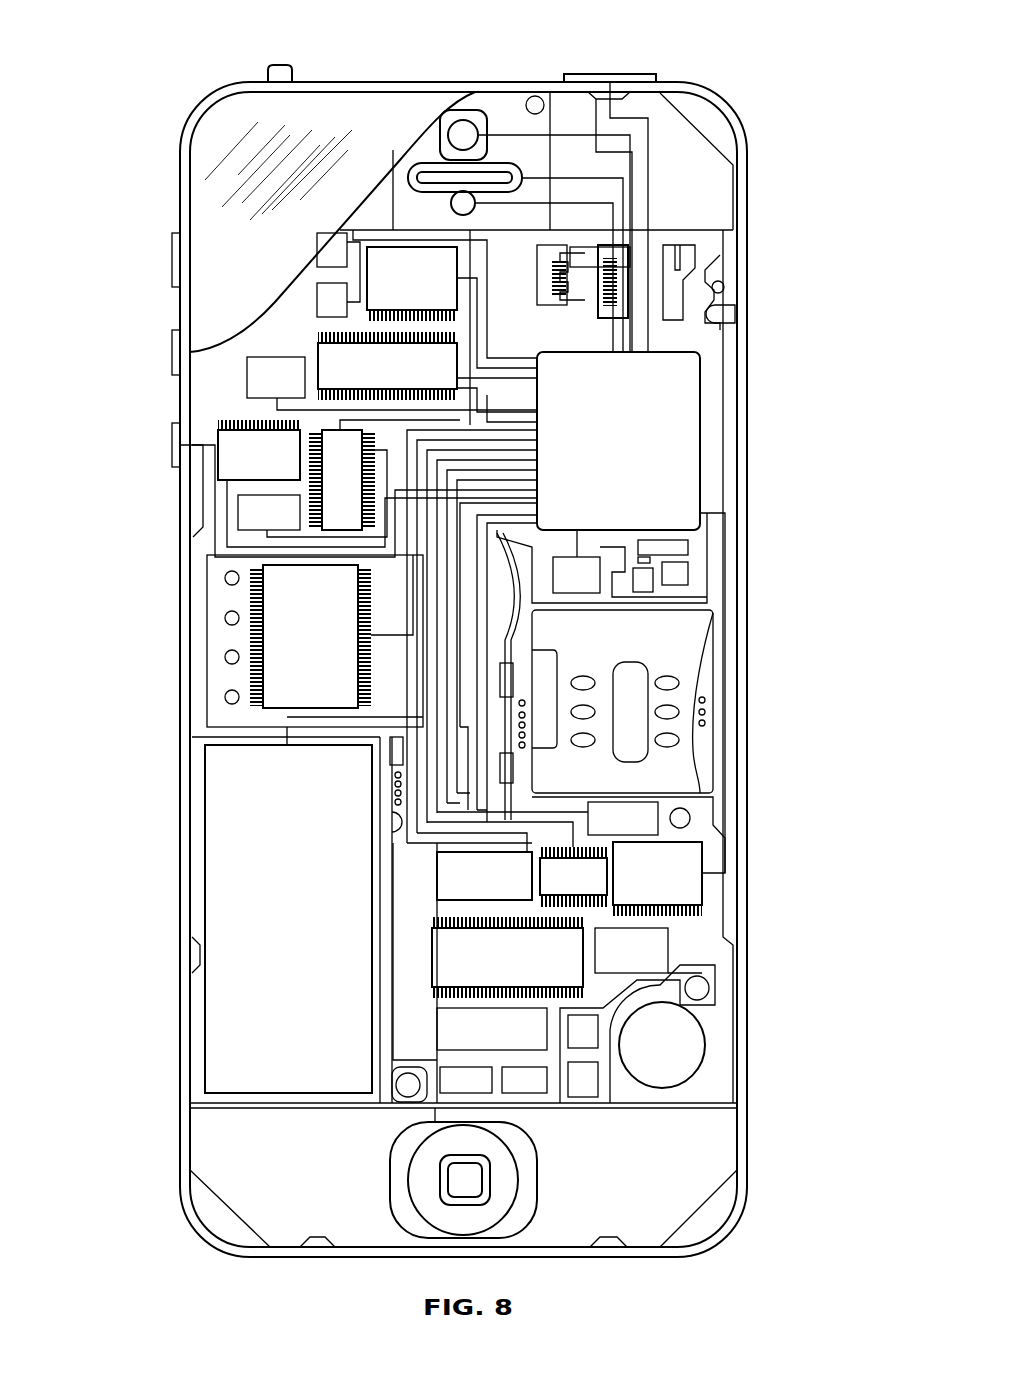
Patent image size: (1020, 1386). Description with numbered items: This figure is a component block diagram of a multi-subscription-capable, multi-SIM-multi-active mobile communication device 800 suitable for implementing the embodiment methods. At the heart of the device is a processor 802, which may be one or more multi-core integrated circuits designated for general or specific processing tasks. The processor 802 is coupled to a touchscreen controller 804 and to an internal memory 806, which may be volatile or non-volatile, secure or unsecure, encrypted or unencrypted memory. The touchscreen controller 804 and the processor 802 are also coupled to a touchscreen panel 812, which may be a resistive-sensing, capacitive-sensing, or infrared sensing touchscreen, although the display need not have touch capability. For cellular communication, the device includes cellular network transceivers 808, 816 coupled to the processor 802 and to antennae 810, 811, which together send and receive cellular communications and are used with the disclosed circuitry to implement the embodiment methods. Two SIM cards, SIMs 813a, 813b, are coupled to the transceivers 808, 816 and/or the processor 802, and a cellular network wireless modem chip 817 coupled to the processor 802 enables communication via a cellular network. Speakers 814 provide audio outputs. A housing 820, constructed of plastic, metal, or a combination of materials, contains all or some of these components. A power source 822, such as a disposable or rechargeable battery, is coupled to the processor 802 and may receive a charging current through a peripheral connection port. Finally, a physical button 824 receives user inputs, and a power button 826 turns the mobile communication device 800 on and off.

The mobile communication device 800 is at (132, 62).
The processor 802 is at (636, 452).
The touchscreen controller 804 is at (429, 292).
The internal memory 806 is at (404, 381).
The cellular network transceiver 808 is at (640, 283).
The antenna 810 is at (700, 305).
The antenna 811 is at (673, 887).
The touchscreen panel 812 is at (222, 178).
The SIM 813a is at (332, 649).
The SIM 813b is at (353, 505).
The speakers 814 is at (413, 165).
The cellular network transceiver 816 is at (526, 969).
The cellular network wireless modem chip 817 is at (285, 467).
The housing 820 is at (745, 1135).
The power source 822 is at (306, 934).
The physical button 824 is at (473, 1185).
The power button 826 is at (608, 78).